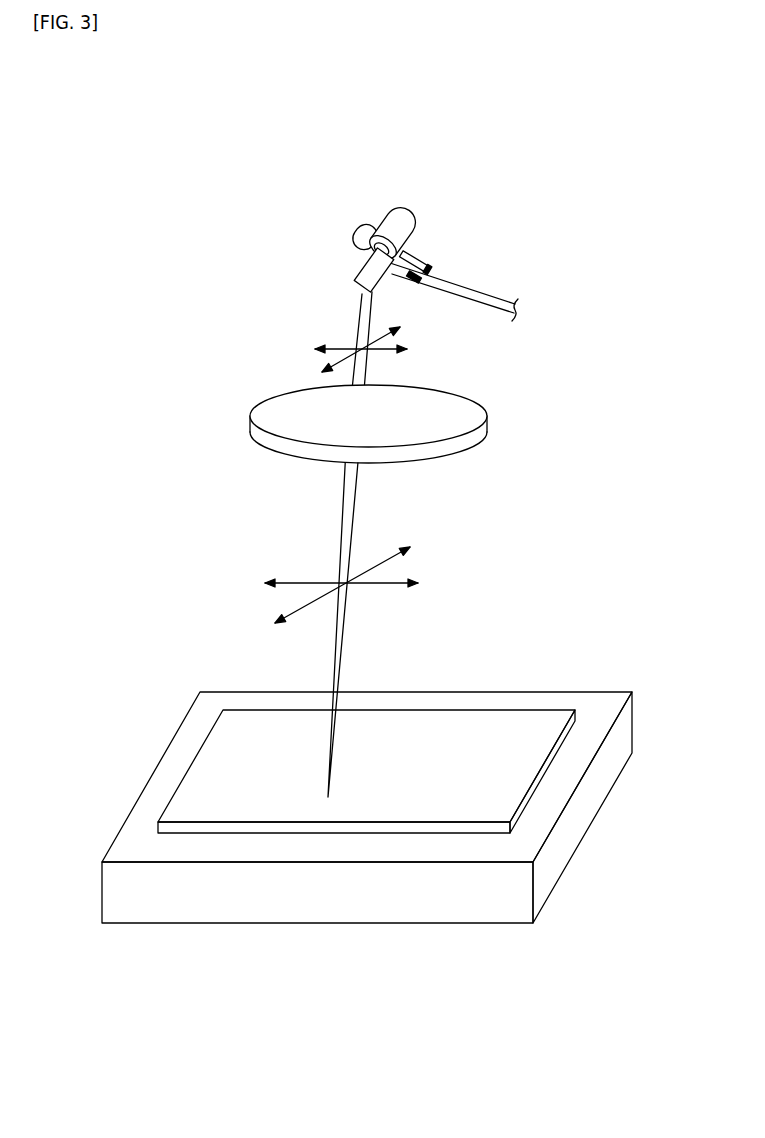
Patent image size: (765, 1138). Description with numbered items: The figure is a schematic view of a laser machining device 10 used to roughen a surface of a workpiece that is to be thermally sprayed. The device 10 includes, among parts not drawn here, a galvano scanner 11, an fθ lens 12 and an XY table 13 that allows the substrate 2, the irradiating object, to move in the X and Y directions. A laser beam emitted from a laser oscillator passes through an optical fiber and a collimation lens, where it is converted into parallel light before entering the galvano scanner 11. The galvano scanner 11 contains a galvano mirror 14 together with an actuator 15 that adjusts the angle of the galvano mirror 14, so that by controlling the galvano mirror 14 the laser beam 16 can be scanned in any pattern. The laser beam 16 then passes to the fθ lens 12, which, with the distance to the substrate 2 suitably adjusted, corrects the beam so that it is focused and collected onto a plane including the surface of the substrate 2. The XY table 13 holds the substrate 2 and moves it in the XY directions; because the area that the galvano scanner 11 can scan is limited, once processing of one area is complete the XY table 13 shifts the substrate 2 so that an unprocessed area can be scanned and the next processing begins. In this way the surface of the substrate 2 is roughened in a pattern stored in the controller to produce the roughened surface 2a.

The laser machining device 10 is at (502, 192).
The galvano scanner 11 is at (387, 210).
The fθ lens 12 is at (487, 422).
The XY table 13 is at (588, 692).
The galvano mirror 14 is at (353, 267).
The actuator 15 is at (352, 236).
The laser beam 16 is at (490, 296).
The substrate 2 is at (560, 750).
The roughened surface 2a is at (498, 723).